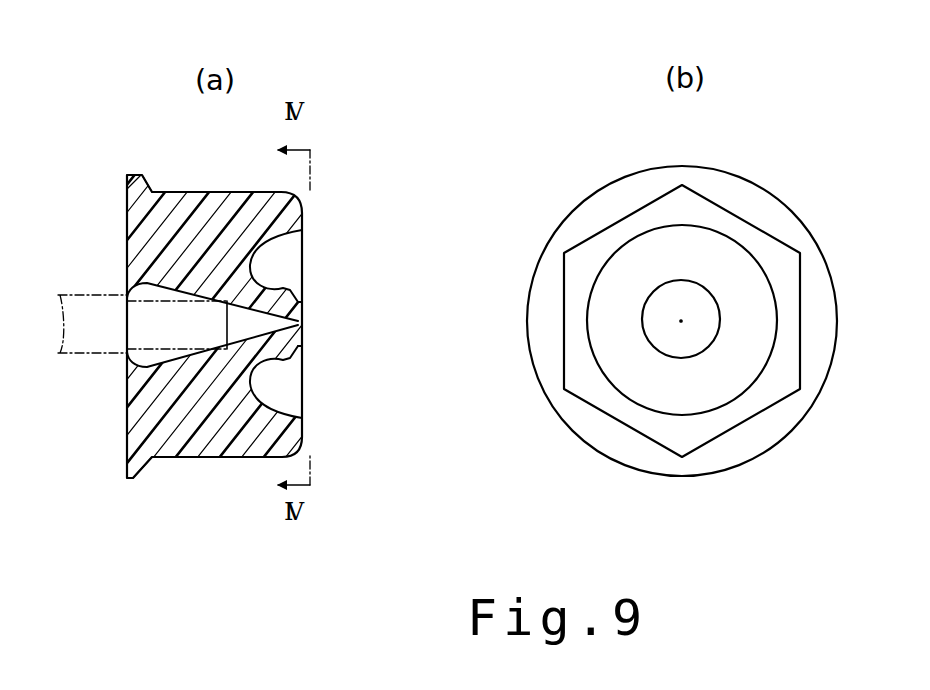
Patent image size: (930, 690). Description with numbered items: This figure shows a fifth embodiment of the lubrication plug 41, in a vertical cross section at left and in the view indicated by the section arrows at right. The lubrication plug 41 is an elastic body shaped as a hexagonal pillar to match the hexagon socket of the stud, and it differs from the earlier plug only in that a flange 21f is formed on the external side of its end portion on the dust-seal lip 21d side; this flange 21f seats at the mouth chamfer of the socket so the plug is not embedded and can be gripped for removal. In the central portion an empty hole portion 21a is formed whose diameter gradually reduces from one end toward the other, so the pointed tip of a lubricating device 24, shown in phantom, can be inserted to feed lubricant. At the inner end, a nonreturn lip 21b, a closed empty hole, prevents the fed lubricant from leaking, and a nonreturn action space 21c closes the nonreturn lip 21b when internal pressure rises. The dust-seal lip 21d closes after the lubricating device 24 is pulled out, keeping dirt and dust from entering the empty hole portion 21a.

The lubrication plug 41 is at (312, 211).
The flange 21f is at (127, 176).
The dust-seal lip 21d is at (128, 355).
The nonreturn action space 21c is at (270, 259).
The nonreturn lip 21b is at (300, 332).
The empty hole portion 21a is at (228, 310).
The lubricating device 24 is at (85, 293).